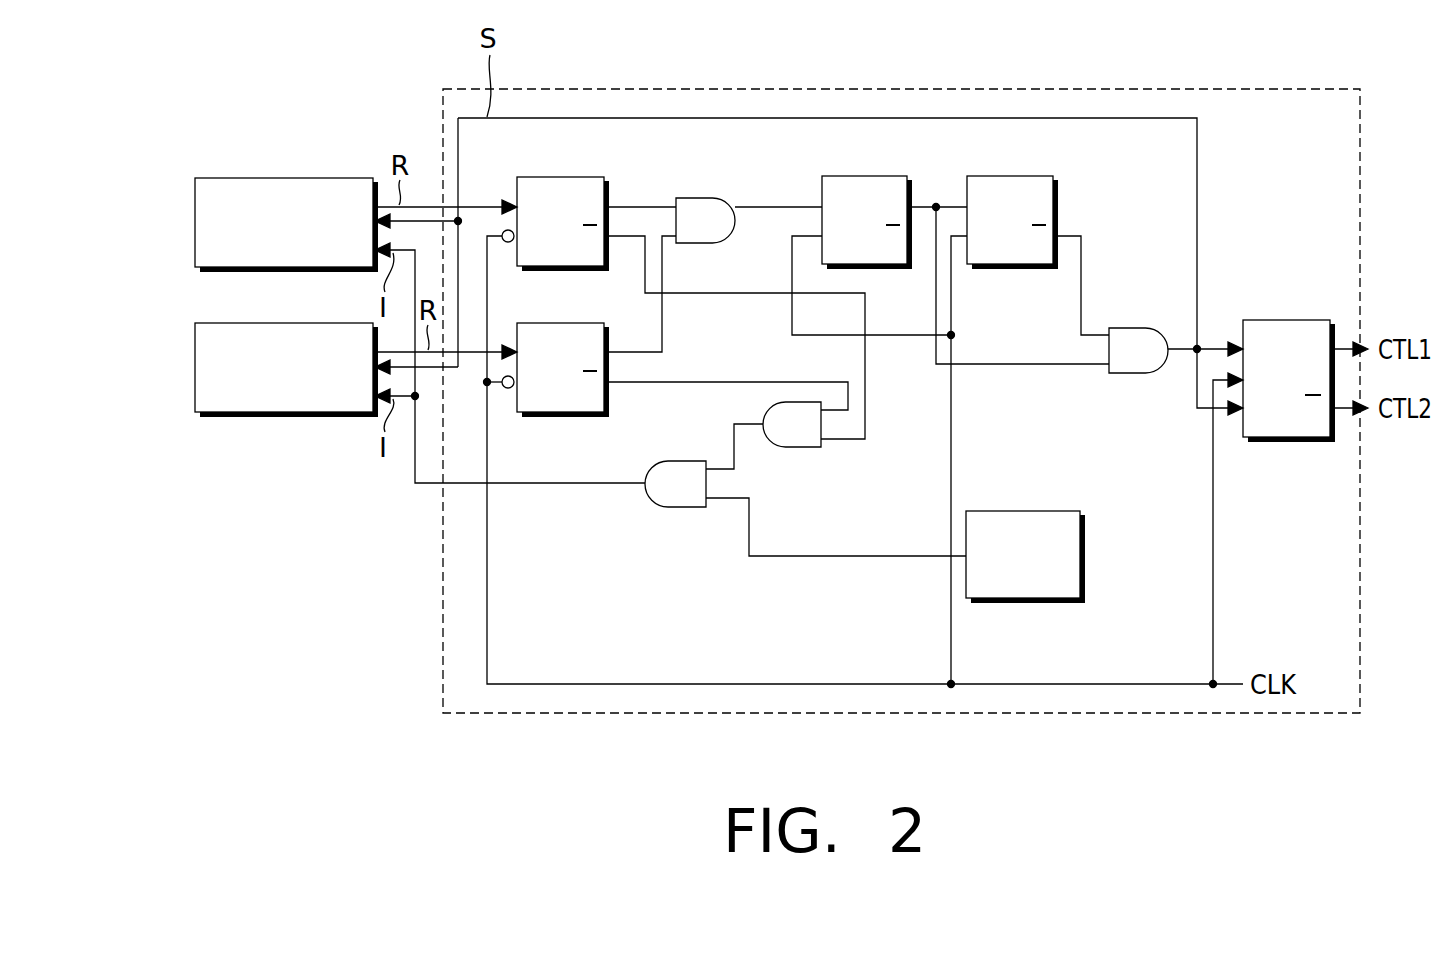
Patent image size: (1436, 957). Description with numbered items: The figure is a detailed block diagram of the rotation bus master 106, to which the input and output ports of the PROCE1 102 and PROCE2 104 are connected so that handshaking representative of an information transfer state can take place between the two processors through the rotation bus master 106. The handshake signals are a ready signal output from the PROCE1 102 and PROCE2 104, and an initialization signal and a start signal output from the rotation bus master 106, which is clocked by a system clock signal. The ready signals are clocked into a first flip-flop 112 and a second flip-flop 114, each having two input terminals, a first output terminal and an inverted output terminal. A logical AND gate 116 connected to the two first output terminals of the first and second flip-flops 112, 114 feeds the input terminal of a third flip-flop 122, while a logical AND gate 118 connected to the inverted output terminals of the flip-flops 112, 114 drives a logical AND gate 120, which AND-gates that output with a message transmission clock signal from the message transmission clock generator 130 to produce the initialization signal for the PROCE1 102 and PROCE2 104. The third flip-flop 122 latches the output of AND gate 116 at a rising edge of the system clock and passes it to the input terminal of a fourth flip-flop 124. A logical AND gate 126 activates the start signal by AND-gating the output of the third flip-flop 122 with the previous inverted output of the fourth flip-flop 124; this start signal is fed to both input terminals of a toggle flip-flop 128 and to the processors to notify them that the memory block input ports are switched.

The PROCE1 102 is at (195, 222).
The PROCE2 104 is at (195, 367).
The rotation bus master (RBM) 106 is at (1165, 89).
The first flip-flop 112 is at (560, 177).
The second flip-flop 114 is at (560, 417).
The logical AND gate 116 is at (697, 198).
The logical AND gate 118 is at (800, 447).
The logical AND gate 120 is at (680, 507).
The third flip-flop 122 is at (865, 176).
The fourth flip-flop 124 is at (1008, 176).
The logical AND gate 126 is at (1140, 328).
The toggle flip-flop 128 is at (1285, 320).
The message transmission clock generator CTC 130 is at (1023, 511).